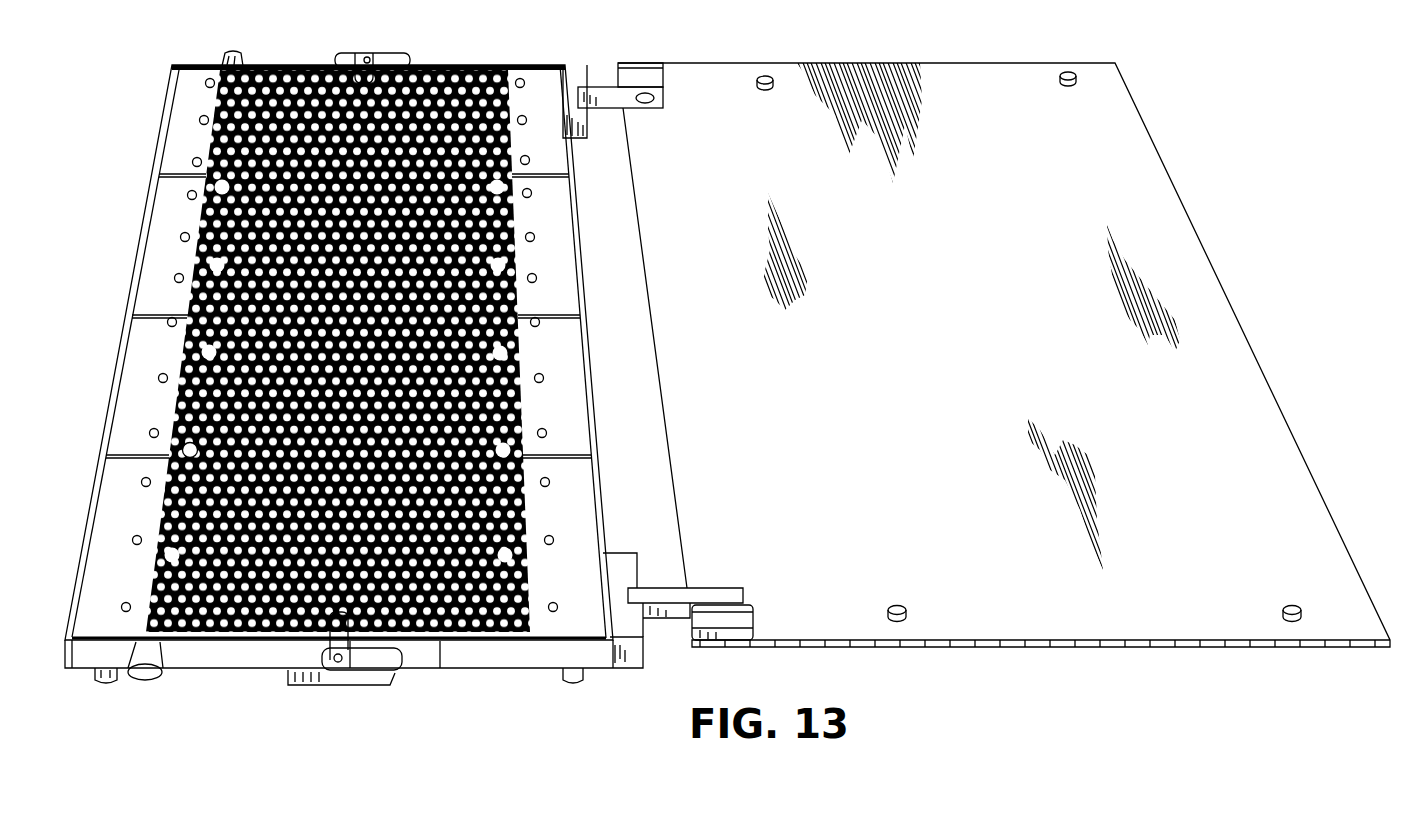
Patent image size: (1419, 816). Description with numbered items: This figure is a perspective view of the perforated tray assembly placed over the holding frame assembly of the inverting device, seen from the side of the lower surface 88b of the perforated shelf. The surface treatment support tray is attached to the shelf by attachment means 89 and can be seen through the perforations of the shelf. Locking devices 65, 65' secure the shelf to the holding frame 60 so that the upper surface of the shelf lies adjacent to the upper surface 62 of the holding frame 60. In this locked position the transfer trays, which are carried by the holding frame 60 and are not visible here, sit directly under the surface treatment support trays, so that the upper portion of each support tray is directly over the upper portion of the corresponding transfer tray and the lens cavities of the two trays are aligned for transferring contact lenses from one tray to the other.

The holding frame 60 is at (577, 615).
The upper surface of holding frame 62 is at (465, 645).
The locking device 65 is at (372, 48).
The locking device 65' is at (345, 668).
The lower surface of perforated shelf 88b is at (203, 637).
The attachment means 89 is at (183, 450).